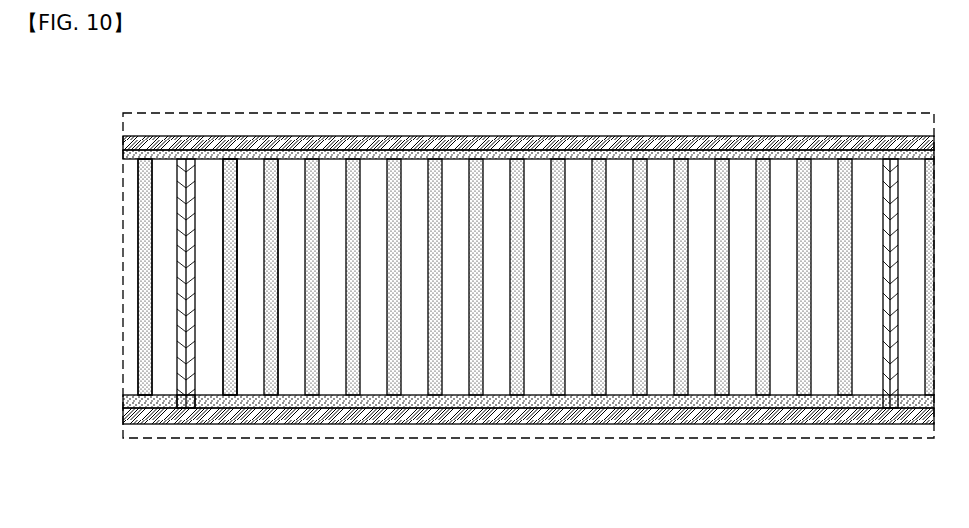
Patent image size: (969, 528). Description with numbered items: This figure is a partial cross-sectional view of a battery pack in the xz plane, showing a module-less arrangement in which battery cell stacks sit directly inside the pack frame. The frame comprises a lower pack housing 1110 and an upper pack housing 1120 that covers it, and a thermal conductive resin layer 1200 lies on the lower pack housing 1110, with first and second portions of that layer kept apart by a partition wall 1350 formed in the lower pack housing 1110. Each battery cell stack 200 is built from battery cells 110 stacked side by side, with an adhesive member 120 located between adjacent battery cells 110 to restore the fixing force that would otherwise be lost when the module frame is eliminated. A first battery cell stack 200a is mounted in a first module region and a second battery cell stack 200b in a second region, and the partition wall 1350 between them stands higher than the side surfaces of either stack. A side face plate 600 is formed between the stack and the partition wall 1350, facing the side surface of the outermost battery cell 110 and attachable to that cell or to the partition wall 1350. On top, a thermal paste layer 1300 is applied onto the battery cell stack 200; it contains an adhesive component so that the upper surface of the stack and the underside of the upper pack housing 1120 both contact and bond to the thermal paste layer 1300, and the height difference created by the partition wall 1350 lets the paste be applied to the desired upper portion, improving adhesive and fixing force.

The battery cell 110 is at (245, 208).
The adhesive member 120 is at (283, 218).
The battery cell stack 200 is at (705, 154).
The first battery cell stack 200a is at (210, 251).
The second battery cell stack 200b is at (154, 234).
The side face plate 600 is at (195, 400).
The lower pack housing 1110 is at (637, 423).
The upper pack housing 1120 is at (552, 142).
The thermal conductive resin layer 1200 is at (717, 403).
The thermal paste layer 1300 is at (382, 147).
The partition wall 1350 is at (186, 162).